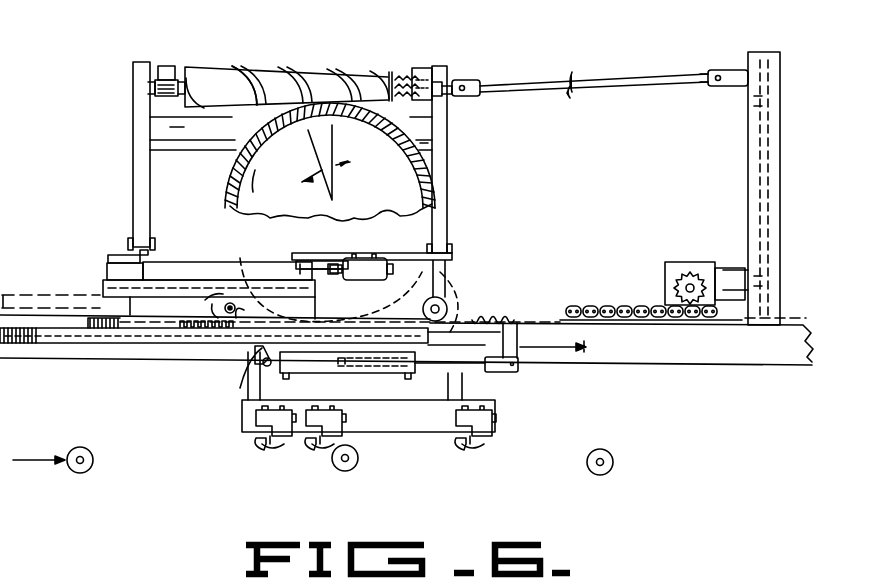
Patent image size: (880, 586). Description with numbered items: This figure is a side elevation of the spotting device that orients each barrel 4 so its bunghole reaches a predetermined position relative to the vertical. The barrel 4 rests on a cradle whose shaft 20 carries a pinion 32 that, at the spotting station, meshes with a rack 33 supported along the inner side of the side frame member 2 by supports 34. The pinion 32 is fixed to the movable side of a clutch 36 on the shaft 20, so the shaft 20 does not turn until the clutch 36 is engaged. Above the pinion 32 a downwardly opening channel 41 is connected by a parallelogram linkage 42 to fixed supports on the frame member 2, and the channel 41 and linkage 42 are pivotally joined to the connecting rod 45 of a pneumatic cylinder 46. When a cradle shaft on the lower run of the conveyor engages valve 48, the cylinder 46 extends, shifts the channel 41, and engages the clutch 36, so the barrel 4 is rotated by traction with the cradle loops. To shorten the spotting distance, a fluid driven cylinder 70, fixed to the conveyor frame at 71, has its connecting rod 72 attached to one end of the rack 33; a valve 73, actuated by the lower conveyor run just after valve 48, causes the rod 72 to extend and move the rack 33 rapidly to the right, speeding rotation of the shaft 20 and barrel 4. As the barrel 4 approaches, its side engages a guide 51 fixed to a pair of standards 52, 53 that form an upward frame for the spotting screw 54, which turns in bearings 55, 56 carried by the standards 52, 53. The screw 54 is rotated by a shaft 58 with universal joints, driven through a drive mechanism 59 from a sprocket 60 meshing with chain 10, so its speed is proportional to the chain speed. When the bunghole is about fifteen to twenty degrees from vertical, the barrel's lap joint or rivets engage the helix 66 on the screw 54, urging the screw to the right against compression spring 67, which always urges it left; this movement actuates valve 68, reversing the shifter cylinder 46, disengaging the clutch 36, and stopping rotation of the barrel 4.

The side frame member 2 is at (735, 355).
The barrel 4 is at (216, 206).
The chain 10 is at (630, 304).
The shaft 20 is at (228, 316).
The pinion 32 is at (215, 322).
The rack 33 is at (518, 328).
The supports 34 is at (54, 343).
The clutch 36 is at (350, 471).
The channel 41 is at (105, 285).
The parallelogram linkage 42 is at (305, 260).
The connecting rod 45 is at (338, 258).
The pneumatic cylinder 46 is at (368, 279).
The valve 48 is at (262, 425).
The guide 51 is at (210, 125).
The standard 52 is at (448, 160).
The standard 53 is at (136, 148).
The spotting screw 54 is at (312, 56).
The bearing 55 is at (486, 434).
The bearing 56 is at (160, 72).
The shaft 58 is at (615, 78).
The drive mechanism 59 is at (792, 153).
The sprocket 60 is at (694, 270).
The helix 66 is at (233, 65).
The compression spring 67 is at (406, 78).
The valve 68 is at (424, 68).
The fluid driven cylinder 70 is at (373, 375).
The fixed securement 71 is at (258, 368).
The connecting rod 72 is at (472, 372).
The valve 73 is at (310, 438).